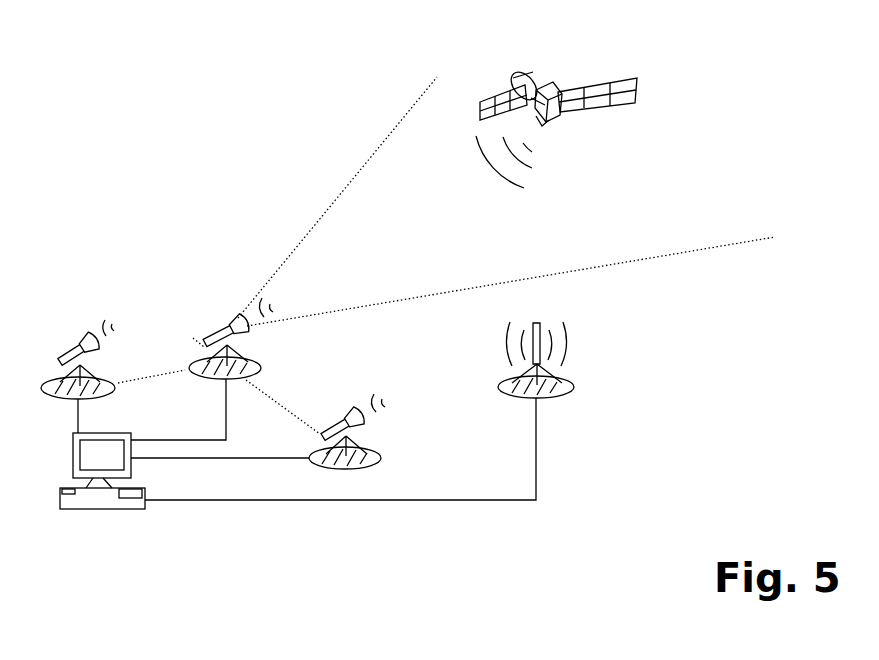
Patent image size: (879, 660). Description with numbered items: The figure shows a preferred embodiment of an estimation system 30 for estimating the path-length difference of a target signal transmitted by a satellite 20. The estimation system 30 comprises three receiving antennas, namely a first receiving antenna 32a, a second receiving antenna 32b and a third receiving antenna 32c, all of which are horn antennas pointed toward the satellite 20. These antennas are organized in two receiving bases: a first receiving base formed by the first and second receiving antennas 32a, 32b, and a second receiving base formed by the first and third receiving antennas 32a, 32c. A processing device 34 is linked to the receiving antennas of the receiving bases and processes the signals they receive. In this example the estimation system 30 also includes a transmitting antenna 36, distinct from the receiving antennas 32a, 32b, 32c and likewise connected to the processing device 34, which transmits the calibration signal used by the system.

The satellite 20 is at (558, 118).
The estimation system 30 is at (148, 239).
The first receiving antenna 32a is at (228, 330).
The second receiving antenna 32b is at (368, 422).
The third receiving antenna 32c is at (82, 339).
The processing device 34 is at (103, 509).
The transmitting antenna 36 is at (573, 386).